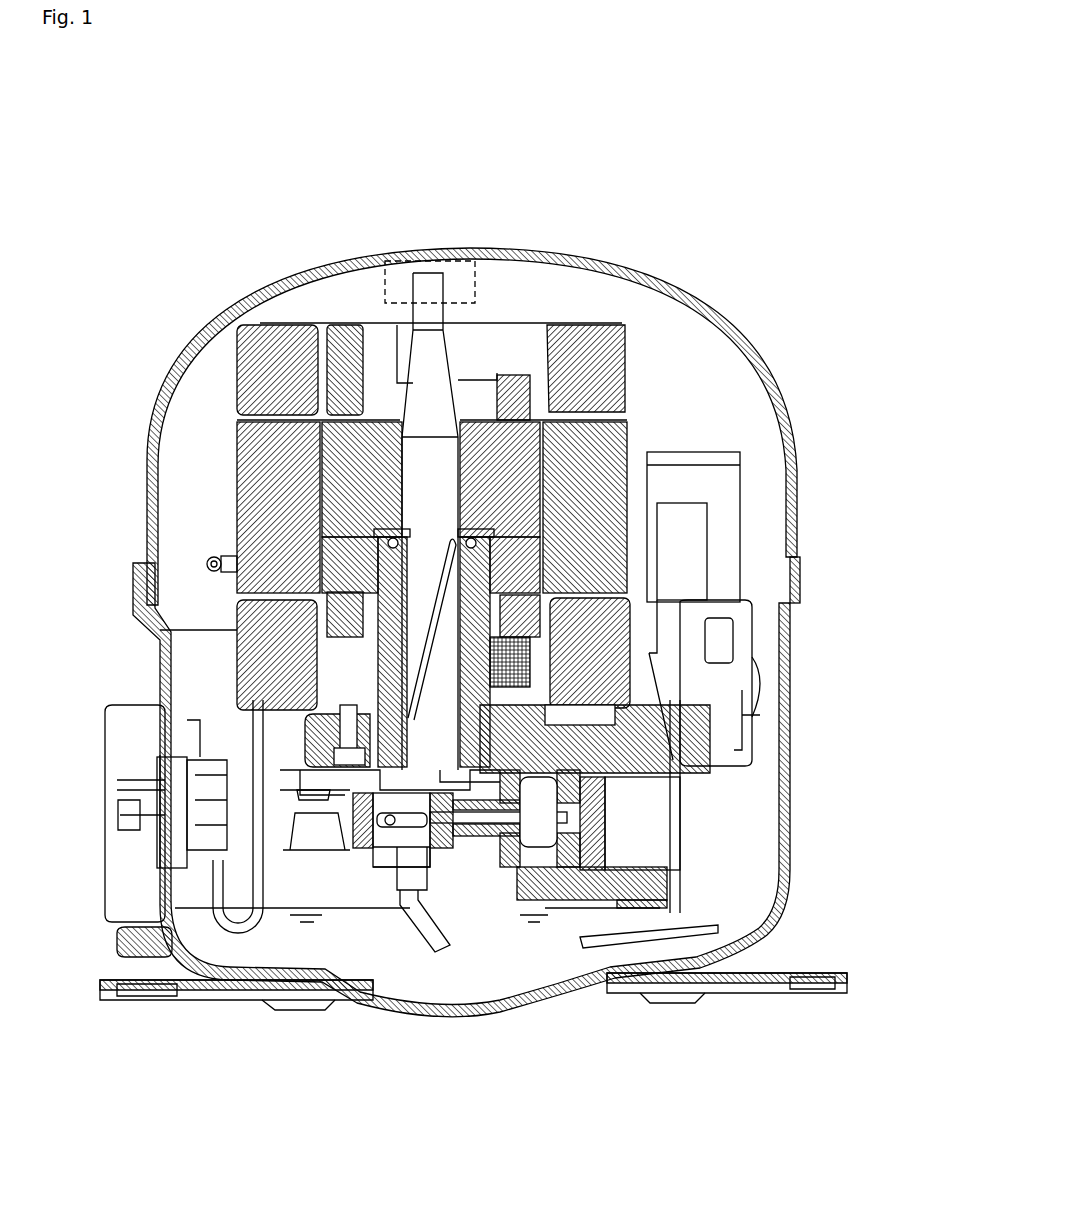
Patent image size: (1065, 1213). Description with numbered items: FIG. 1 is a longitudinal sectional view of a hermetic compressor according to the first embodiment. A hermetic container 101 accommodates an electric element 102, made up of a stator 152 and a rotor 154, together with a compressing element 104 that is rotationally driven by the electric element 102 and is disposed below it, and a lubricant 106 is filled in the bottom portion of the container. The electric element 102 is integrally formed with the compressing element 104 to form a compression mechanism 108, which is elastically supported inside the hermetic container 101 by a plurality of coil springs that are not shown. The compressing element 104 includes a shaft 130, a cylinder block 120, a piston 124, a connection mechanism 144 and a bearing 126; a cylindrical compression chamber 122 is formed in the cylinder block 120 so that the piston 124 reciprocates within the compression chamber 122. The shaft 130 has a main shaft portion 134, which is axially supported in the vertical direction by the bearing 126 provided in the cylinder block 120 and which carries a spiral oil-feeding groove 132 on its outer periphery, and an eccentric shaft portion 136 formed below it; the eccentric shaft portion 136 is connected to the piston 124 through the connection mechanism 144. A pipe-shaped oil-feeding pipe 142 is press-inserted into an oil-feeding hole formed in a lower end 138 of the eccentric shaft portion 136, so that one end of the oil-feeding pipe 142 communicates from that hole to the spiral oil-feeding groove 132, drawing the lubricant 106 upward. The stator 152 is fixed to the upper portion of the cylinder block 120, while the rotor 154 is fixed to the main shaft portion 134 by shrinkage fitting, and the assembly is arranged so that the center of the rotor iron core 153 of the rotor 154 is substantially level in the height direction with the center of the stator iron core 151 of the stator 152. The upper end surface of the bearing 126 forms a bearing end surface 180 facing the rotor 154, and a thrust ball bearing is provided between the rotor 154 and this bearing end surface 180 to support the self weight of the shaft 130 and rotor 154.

The hermetic container 101 is at (472, 389).
The electric element 102 is at (497, 320).
The compressing element 104 is at (720, 843).
The lubricant 106 is at (463, 983).
The compression mechanism 108 is at (303, 737).
The cylinder block 120 is at (640, 740).
The compression chamber 122 is at (647, 810).
The piston 124 is at (603, 852).
The bearing 126 is at (633, 617).
The shaft 130 is at (430, 290).
The spiral oil-feeding groove 132 is at (440, 590).
The main shaft portion 134 is at (430, 722).
The eccentric shaft portion 136 is at (390, 837).
The lower end 138 is at (393, 862).
The oil-feeding pipe 142 is at (418, 943).
The connection mechanism 144 is at (482, 838).
The stator iron core 151 is at (632, 440).
The stator 152 is at (610, 322).
The rotor iron core 153 is at (330, 470).
The rotor 154 is at (375, 348).
The bearing end surface 180 is at (590, 523).